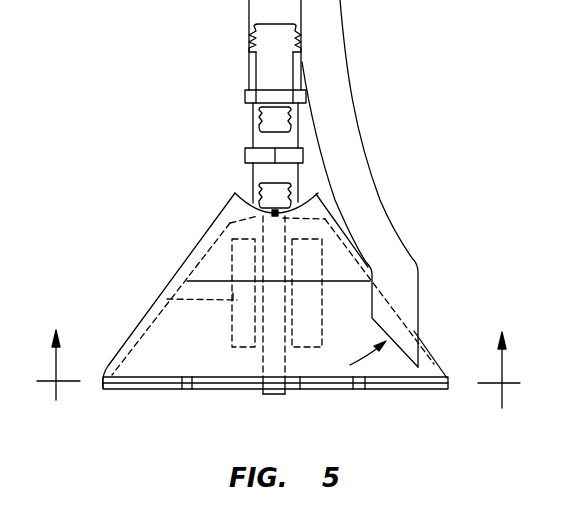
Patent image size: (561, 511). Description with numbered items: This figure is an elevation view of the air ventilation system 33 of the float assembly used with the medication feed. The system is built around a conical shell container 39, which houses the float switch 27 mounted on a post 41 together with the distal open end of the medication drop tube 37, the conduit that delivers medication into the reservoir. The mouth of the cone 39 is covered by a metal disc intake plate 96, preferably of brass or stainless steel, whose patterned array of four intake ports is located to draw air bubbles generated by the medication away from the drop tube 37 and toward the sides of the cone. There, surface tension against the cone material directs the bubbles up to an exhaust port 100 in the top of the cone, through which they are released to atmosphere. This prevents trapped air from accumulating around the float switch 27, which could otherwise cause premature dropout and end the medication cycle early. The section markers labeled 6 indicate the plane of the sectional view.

The section line 6- 6 is at (278, 371).
The float switch 27 is at (167, 299).
The air ventilation system 33 is at (394, 168).
The medication drop tube 37 is at (346, 124).
The conical shell container 39 is at (447, 382).
The post 41 is at (293, 399).
The intake plate 96 is at (391, 390).
The exhaust port 100 is at (235, 221).